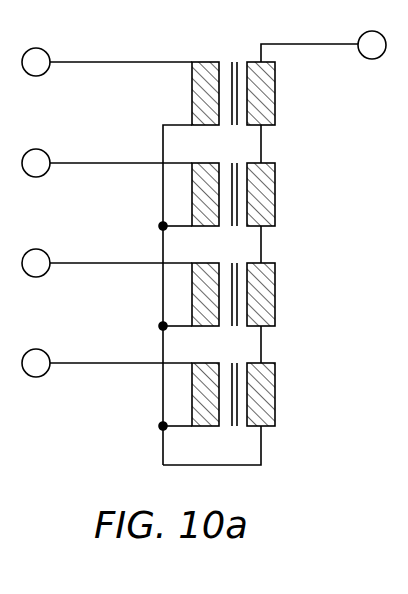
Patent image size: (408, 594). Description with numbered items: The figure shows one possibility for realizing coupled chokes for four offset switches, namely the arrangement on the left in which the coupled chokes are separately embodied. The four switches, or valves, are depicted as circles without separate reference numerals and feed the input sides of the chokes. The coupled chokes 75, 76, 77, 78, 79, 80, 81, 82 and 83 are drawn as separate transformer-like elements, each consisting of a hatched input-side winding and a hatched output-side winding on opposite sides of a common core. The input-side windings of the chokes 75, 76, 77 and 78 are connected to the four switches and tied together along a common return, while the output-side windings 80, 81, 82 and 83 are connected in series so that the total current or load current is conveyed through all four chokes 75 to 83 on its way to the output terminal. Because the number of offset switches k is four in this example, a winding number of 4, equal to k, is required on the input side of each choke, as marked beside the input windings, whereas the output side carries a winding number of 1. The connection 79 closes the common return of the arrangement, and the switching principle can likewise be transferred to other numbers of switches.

The coupled choke 75 is at (217, 61).
The coupled choke 76 is at (217, 162).
The coupled choke 77 is at (217, 262).
The coupled choke 78 is at (217, 362).
The coupled choke 79 is at (212, 445).
The coupled choke 80 is at (276, 81).
The coupled choke 81 is at (276, 184).
The coupled choke 82 is at (276, 284).
The coupled choke 83 is at (276, 384).
The winding number 4 is at (195, 244).
The secondary turns count 1 is at (276, 244).